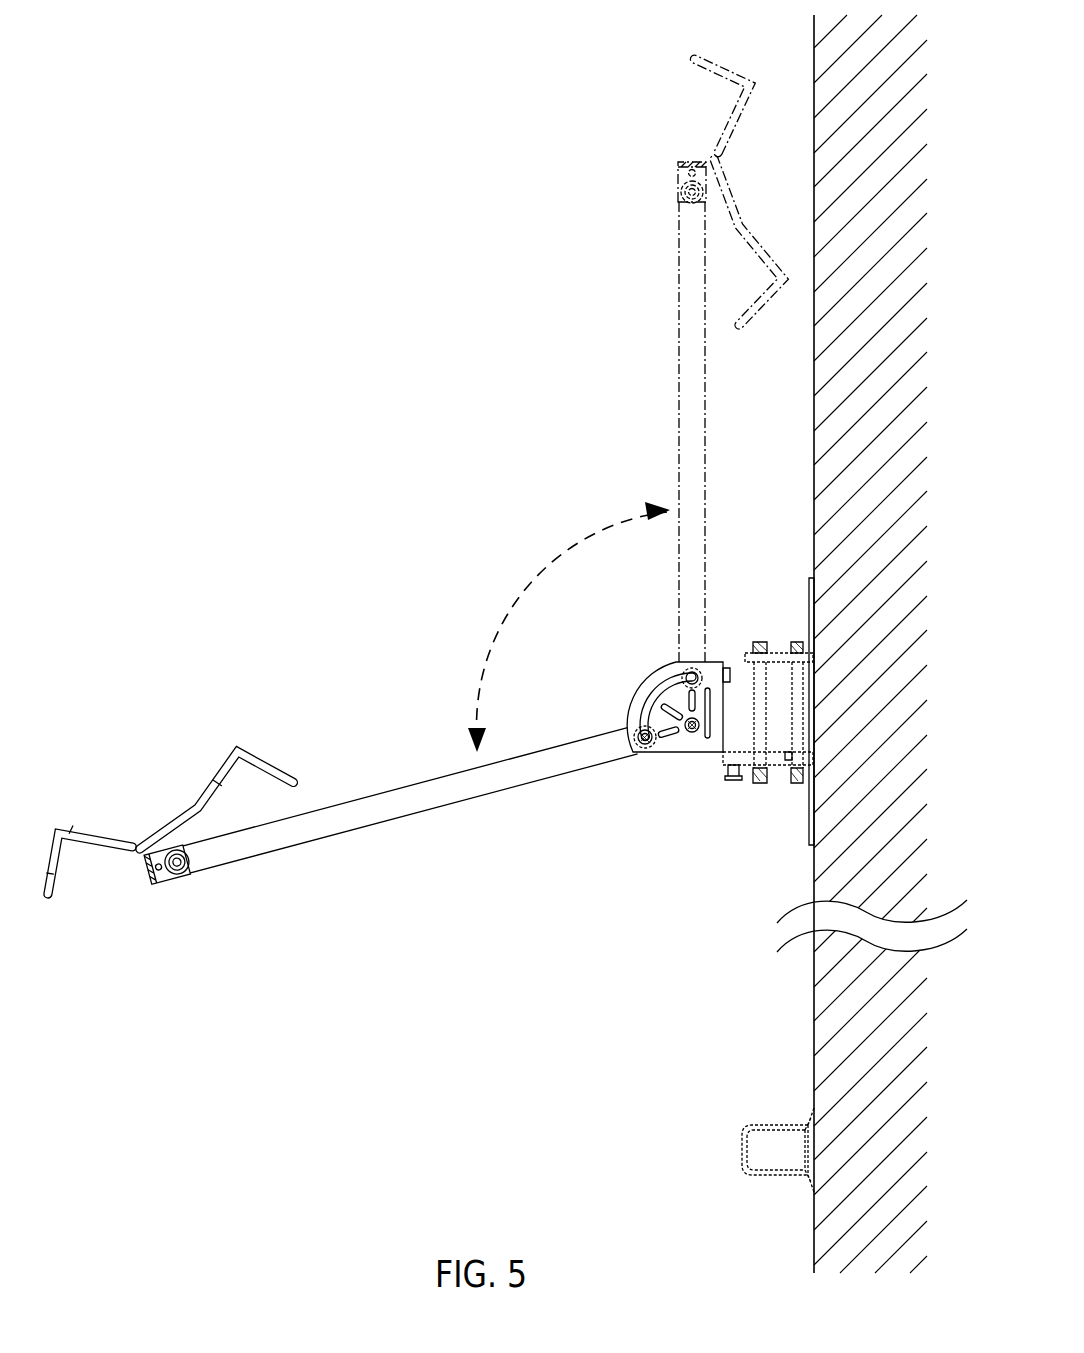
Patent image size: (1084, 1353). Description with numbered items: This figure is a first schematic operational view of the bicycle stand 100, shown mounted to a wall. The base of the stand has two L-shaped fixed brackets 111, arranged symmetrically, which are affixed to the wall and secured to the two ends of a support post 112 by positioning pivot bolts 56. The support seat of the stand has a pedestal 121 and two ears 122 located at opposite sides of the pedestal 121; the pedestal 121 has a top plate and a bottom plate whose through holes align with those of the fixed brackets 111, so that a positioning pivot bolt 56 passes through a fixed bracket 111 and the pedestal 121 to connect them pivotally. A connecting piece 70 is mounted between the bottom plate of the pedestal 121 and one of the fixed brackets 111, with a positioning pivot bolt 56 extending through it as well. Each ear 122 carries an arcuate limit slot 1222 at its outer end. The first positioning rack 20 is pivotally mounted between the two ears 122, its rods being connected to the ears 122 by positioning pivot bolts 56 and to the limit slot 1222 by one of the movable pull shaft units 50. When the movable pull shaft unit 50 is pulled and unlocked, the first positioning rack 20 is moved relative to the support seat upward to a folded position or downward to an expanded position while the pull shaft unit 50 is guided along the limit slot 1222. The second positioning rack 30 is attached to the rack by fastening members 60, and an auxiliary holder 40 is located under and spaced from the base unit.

The bicycle stand 100 is at (417, 522).
The first positioning rack 20 is at (348, 848).
The second positioning rack 30 is at (101, 815).
The fastening member 60 is at (177, 876).
The fixed bracket 111 is at (781, 652).
The support post 112 is at (800, 648).
The pedestal 121 is at (738, 655).
The ear 122 is at (677, 745).
The limit slot 1222 is at (653, 698).
The movable pull shaft unit 50 is at (621, 759).
The positioning pivot bolt 56 is at (688, 745).
The connecting piece 70 is at (722, 758).
The auxiliary holder 40 is at (725, 1148).